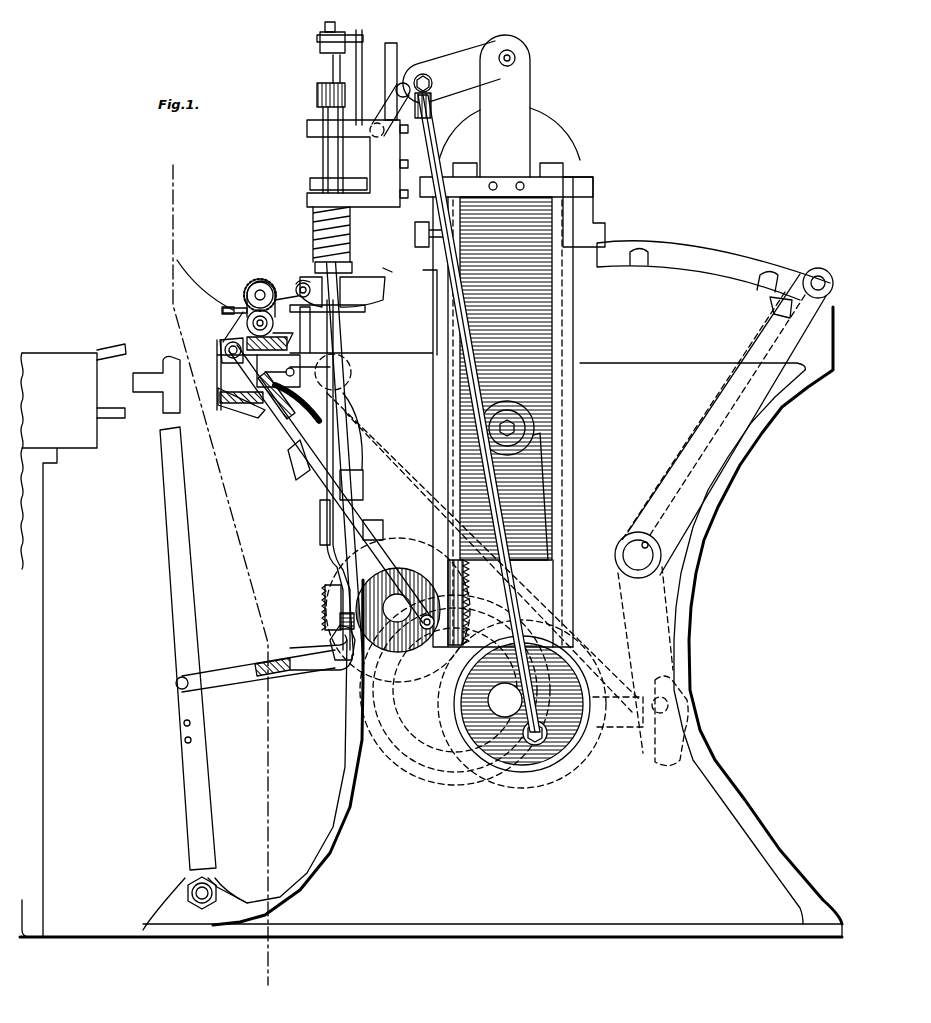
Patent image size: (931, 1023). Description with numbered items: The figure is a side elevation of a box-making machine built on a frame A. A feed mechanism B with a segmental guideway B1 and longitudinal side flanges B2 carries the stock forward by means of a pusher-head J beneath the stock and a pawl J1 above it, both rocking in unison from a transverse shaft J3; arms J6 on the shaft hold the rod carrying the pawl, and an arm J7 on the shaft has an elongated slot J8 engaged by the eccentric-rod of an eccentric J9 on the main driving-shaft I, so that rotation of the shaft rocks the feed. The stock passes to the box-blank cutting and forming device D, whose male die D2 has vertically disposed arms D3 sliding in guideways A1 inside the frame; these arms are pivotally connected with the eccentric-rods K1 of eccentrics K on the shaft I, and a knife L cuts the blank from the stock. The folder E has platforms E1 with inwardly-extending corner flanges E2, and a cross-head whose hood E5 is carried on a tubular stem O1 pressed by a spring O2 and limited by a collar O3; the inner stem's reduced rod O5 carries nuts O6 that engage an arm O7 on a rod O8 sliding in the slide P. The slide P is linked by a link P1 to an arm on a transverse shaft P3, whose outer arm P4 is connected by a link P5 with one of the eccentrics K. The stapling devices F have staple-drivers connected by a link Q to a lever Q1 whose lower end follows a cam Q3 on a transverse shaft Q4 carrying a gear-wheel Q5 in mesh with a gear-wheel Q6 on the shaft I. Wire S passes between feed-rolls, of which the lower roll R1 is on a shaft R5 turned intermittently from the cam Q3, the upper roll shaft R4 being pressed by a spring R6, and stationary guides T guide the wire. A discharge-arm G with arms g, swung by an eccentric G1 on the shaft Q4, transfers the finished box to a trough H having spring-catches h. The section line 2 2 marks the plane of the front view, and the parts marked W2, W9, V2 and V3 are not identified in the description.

The section line 2 2 is at (225, 575).
The frame A is at (431, 567).
The guideways A1 is at (565, 425).
The receiver or trough H is at (84, 345).
The spring-catches h is at (112, 380).
The arms g is at (150, 390).
The discharge-arm G is at (175, 628).
The eccentric G1 is at (322, 672).
The transverse shaft Q4 is at (362, 642).
The gear-wheel Q5 is at (328, 590).
The cam Q3 is at (428, 578).
The gear-wheel Q6 is at (452, 757).
The main driving-shaft I is at (505, 700).
The eccentric J9 is at (472, 772).
The eccentrics K is at (550, 745).
The eccentric-rods K1 is at (527, 490).
The vertically-disposed arms D3 is at (540, 340).
The box-blank cutting and forming device D is at (590, 215).
The male die D2 is at (420, 230).
The knife L is at (425, 272).
The slide P is at (320, 130).
The link P1 is at (380, 85).
The arm P4 is at (468, 60).
The transverse shaft P3 is at (517, 58).
The link P5 is at (440, 152).
The tubular stem O1 is at (323, 150).
The collar O3 is at (310, 185).
The reduced rod O5 is at (333, 68).
The nuts O6 is at (320, 40).
The rod O8 is at (363, 35).
The arm O7 is at (364, 40).
The spring O2 is at (313, 232).
The folder E is at (210, 373).
The hood E5 is at (380, 264).
The link Q is at (360, 315).
The roller W2 is at (352, 375).
The lever Q1 is at (380, 436).
The feed-roll R1 is at (433, 401).
The shaft W9 is at (405, 443).
The nut V3 is at (366, 515).
The platforms E1 is at (302, 494).
The flanges E2 is at (245, 410).
The pivot V2 is at (224, 345).
The shaft R4 is at (250, 290).
The shaft R5 is at (246, 323).
The spring R6 is at (297, 285).
The stapling devices F is at (296, 292).
The stationary guides T is at (225, 305).
The wire S is at (190, 276).
The feed mechanism B is at (713, 269).
The segmental guideway B1 is at (704, 275).
The longitudinal side flanges B2 is at (722, 250).
The pusher-head J is at (768, 300).
The pawl J1 is at (790, 283).
The arms J6 is at (820, 274).
The transverse shaft J3 is at (648, 560).
The arm J7 is at (682, 650).
The elongated slot J8 is at (685, 750).